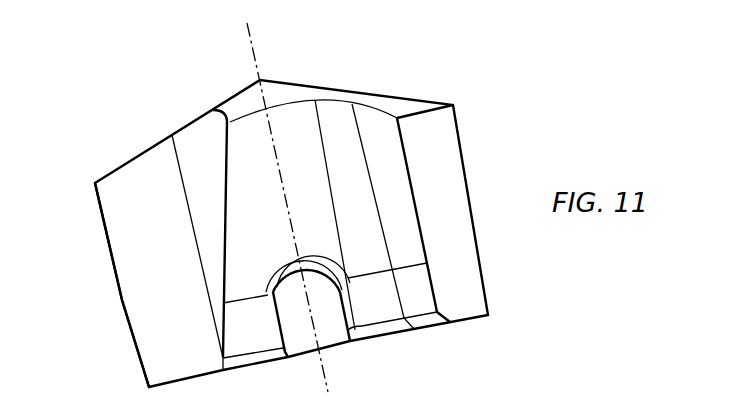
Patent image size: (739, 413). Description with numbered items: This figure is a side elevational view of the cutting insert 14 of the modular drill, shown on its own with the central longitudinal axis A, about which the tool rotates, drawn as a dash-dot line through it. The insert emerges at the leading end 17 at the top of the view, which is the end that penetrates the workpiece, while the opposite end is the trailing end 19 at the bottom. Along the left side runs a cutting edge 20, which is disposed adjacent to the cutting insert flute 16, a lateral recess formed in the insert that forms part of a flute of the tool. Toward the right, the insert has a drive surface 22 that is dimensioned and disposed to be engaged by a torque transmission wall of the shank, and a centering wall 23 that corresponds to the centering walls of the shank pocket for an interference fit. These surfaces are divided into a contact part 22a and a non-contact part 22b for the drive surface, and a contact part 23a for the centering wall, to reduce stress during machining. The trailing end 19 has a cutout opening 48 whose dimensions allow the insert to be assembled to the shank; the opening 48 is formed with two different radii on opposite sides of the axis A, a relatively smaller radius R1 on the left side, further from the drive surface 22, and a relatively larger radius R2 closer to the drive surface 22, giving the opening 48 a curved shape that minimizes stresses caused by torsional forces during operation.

The cutting insert 14 is at (72, 212).
The cutting insert flute 16 is at (157, 293).
The leading end 17 is at (255, 74).
The trailing end 19 is at (438, 335).
The cutting edge 20 is at (107, 246).
The drive surface 22 is at (376, 132).
The contact part 22a is at (388, 169).
The non-contact part 22b is at (415, 277).
The centering wall 23 is at (292, 120).
The contact part 23a is at (312, 147).
The cutout opening 48 is at (338, 351).
The central longitudinal axis A is at (252, 33).
The smaller radius R1 is at (323, 278).
The larger radius R2 is at (350, 282).